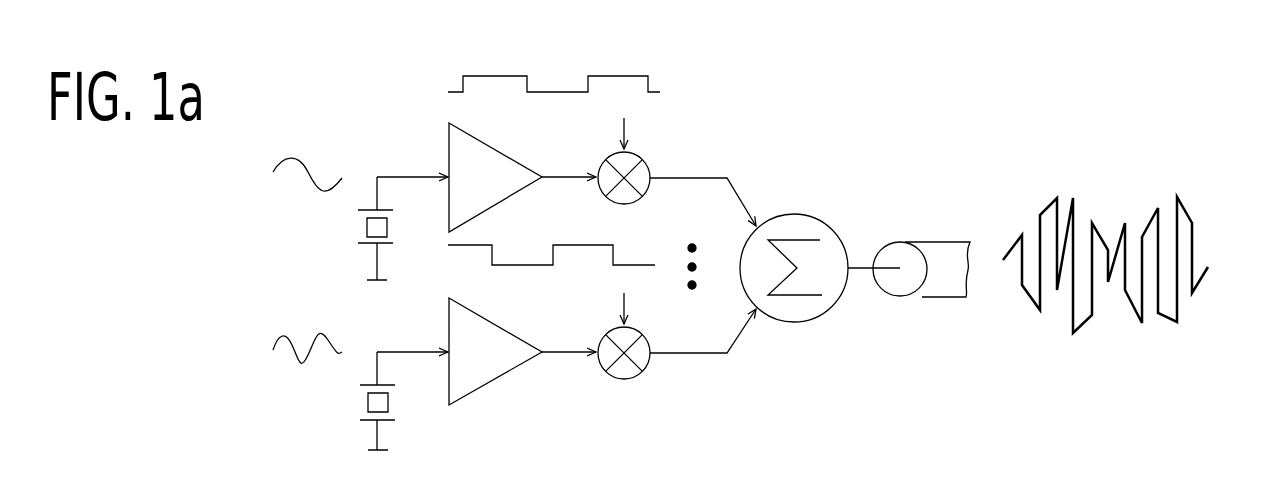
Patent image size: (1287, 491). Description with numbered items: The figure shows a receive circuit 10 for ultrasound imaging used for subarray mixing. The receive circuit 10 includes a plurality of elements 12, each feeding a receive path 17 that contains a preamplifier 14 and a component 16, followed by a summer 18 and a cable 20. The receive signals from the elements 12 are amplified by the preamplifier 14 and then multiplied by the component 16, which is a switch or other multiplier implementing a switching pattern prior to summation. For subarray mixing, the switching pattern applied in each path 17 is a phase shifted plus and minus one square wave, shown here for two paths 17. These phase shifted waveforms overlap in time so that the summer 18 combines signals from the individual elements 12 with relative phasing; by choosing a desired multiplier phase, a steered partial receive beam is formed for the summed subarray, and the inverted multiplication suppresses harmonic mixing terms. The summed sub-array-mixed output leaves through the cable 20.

The receive circuit 10 is at (896, 99).
The elements 12 is at (355, 240).
The preamplifier 14 is at (510, 196).
The component 16 is at (647, 160).
The receive path 17 is at (403, 175).
The summer 18 is at (797, 213).
The cable 20 is at (918, 242).